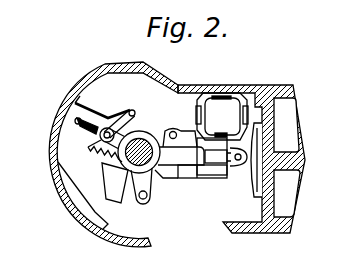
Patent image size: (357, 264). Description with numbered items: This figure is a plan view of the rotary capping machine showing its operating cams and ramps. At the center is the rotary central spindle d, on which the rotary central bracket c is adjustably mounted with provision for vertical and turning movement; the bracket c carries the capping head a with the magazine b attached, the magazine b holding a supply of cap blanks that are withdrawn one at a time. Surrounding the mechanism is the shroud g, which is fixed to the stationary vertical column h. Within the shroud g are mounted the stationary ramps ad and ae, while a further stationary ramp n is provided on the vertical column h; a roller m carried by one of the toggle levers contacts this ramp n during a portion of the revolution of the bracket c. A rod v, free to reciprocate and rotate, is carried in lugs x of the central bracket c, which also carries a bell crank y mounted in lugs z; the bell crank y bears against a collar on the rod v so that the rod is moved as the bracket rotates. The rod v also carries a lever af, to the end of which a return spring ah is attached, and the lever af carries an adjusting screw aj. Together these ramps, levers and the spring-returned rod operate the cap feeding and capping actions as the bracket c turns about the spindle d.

The shroud g is at (62, 118).
The stationary ramp ad is at (82, 228).
The bell crank y is at (83, 103).
The lugs z is at (98, 108).
The stationary ramp ae is at (107, 120).
The lever af is at (129, 120).
The adjusting screw aj is at (84, 130).
The return spring ah is at (104, 160).
The rod v is at (177, 135).
The lugs x is at (173, 131).
The rotary central bracket c is at (146, 143).
The magazine b is at (222, 116).
The stationary vertical column h is at (266, 143).
The stationary ramp n is at (252, 164).
The rotary central spindle d is at (164, 179).
The capping head a is at (205, 178).
The roller m is at (241, 171).